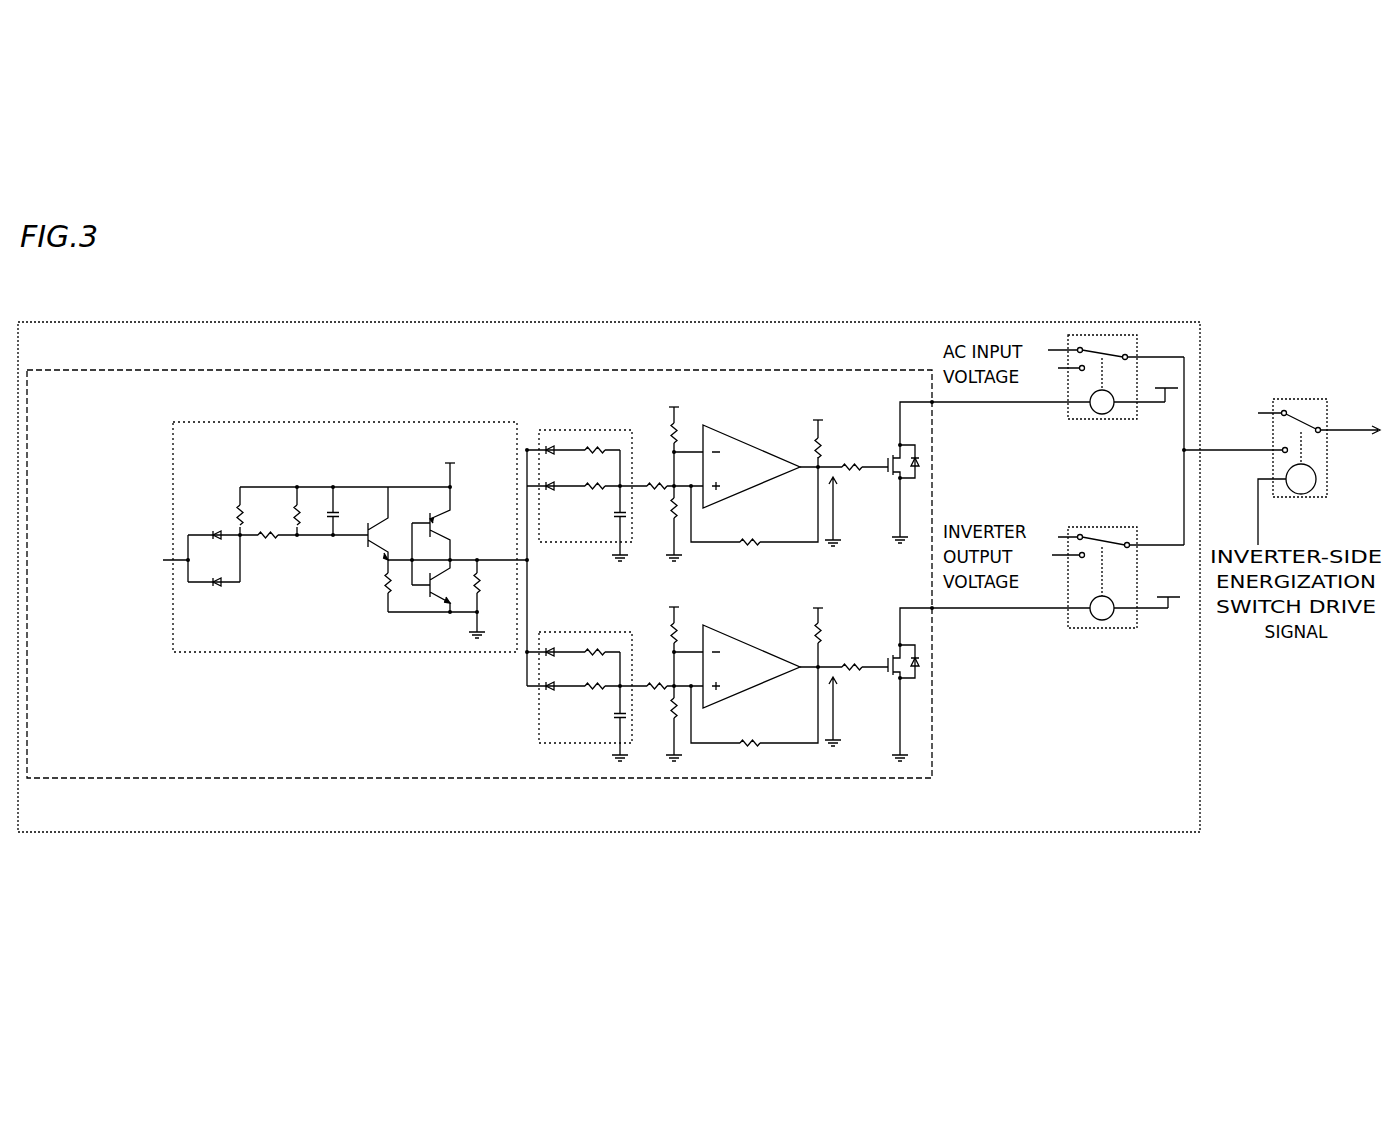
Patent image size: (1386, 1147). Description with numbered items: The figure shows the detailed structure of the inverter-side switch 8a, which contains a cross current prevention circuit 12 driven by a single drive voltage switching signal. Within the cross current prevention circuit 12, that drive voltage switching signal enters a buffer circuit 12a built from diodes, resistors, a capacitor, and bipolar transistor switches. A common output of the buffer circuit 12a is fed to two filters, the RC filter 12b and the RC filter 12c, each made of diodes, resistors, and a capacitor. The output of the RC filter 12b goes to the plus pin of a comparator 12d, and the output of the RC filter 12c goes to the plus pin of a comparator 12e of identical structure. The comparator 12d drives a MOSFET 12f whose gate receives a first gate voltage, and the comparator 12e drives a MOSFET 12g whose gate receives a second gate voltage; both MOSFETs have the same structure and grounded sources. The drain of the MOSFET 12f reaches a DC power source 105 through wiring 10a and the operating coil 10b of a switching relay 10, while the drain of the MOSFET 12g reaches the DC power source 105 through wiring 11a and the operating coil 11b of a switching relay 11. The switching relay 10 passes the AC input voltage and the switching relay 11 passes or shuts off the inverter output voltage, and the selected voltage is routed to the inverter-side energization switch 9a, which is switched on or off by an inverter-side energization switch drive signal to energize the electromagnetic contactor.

The inverter-side switch 8a is at (135, 320).
The cross current prevention circuit 12 is at (210, 368).
The buffer circuit 12a is at (200, 421).
The RC filter 12b is at (585, 429).
The RC filter 12c is at (590, 631).
The comparator 12d is at (728, 435).
The comparator 12e is at (728, 635).
The MOSFET 12f is at (886, 450).
The MOSFET 12g is at (890, 650).
The switching relay 10 is at (1063, 467).
The wiring 10a is at (1008, 403).
The operating coil 10b is at (1095, 415).
The switching relay 11 is at (1058, 596).
The wiring 11a is at (1012, 615).
The operating coil 11b is at (1097, 623).
The DC power source 105 is at (1167, 382).
The inverter-side energization switch 9a is at (1303, 398).